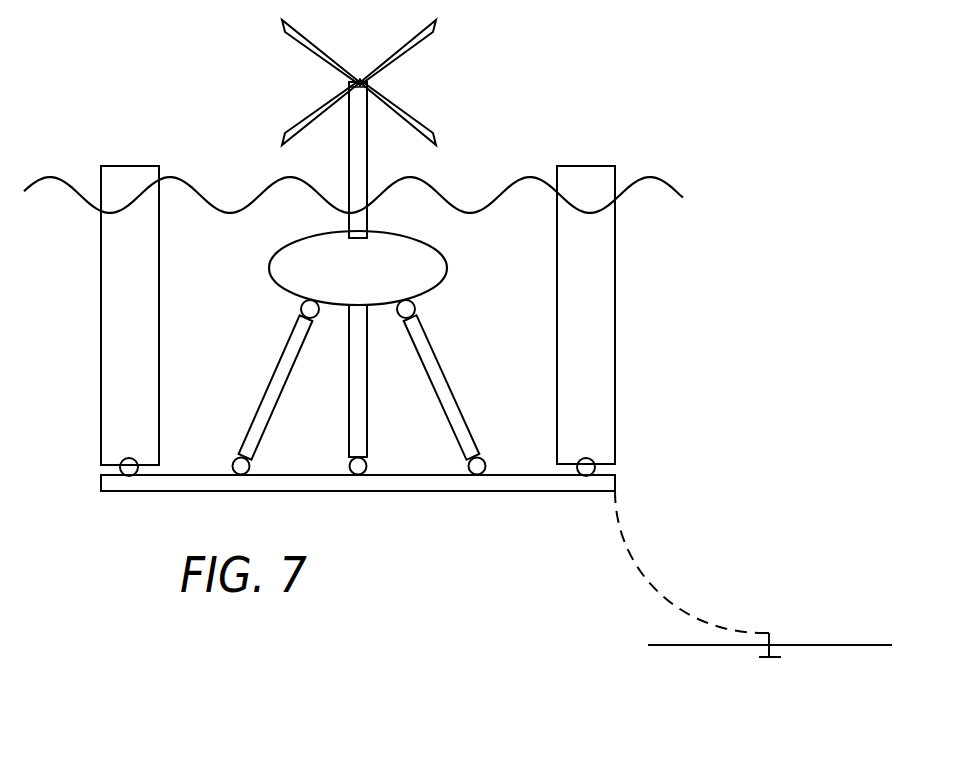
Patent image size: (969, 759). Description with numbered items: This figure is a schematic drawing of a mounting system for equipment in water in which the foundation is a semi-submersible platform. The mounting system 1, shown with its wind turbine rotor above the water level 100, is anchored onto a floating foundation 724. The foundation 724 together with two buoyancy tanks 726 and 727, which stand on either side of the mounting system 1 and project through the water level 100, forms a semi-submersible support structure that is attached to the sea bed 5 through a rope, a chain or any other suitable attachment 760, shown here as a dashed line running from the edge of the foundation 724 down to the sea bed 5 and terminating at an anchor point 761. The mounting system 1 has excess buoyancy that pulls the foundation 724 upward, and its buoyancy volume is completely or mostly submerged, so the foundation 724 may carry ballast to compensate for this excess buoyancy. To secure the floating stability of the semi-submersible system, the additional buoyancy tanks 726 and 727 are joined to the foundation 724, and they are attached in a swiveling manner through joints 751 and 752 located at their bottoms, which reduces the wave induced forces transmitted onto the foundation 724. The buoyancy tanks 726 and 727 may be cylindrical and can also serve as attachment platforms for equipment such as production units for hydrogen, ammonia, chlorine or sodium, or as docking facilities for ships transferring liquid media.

The water level 100 is at (652, 175).
The mounting system 1 is at (393, 230).
The buoyancy tank 726 is at (112, 285).
The buoyancy tank 727 is at (607, 298).
The joint 752 is at (129, 462).
The joint 751 is at (588, 463).
The floating foundation 724 is at (500, 483).
The attachment 760 is at (650, 588).
The sea bed 5 is at (812, 645).
The anchor 761 is at (770, 657).